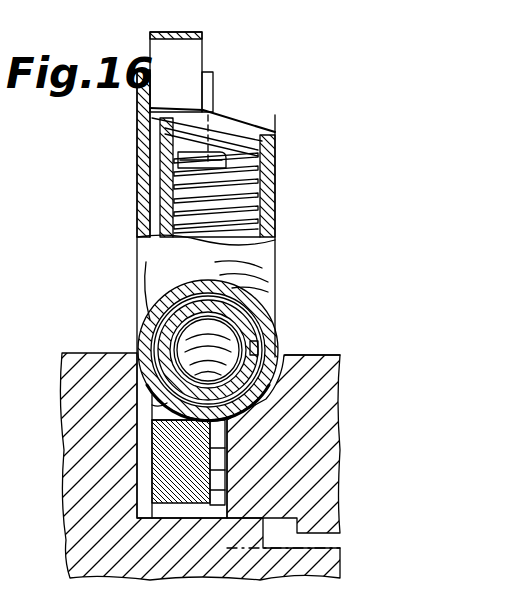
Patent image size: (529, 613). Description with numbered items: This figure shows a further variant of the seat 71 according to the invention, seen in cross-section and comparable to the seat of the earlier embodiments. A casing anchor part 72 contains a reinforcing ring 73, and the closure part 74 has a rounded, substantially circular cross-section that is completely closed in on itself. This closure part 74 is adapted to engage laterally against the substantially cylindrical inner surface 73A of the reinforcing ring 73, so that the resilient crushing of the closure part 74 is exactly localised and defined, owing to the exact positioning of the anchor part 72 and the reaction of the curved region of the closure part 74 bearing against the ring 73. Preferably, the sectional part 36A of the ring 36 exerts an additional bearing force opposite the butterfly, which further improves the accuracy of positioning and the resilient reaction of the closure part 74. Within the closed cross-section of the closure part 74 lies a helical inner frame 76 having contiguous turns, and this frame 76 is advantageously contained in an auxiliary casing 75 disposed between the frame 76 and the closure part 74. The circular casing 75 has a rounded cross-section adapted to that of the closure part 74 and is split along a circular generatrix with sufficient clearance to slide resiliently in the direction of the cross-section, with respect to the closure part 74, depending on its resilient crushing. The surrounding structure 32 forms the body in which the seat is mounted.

The base plate 32 is at (102, 368).
The ring 36 is at (296, 354).
The sectional part 36A is at (320, 377).
The seat 71 is at (284, 243).
The casing anchor part 72 is at (213, 88).
The reinforcing ring 73 is at (194, 50).
The cylindrical inner surface 73A is at (138, 418).
The closure part 74 is at (243, 131).
The auxiliary casing 75 is at (262, 167).
The helical inner frame 76 is at (197, 170).